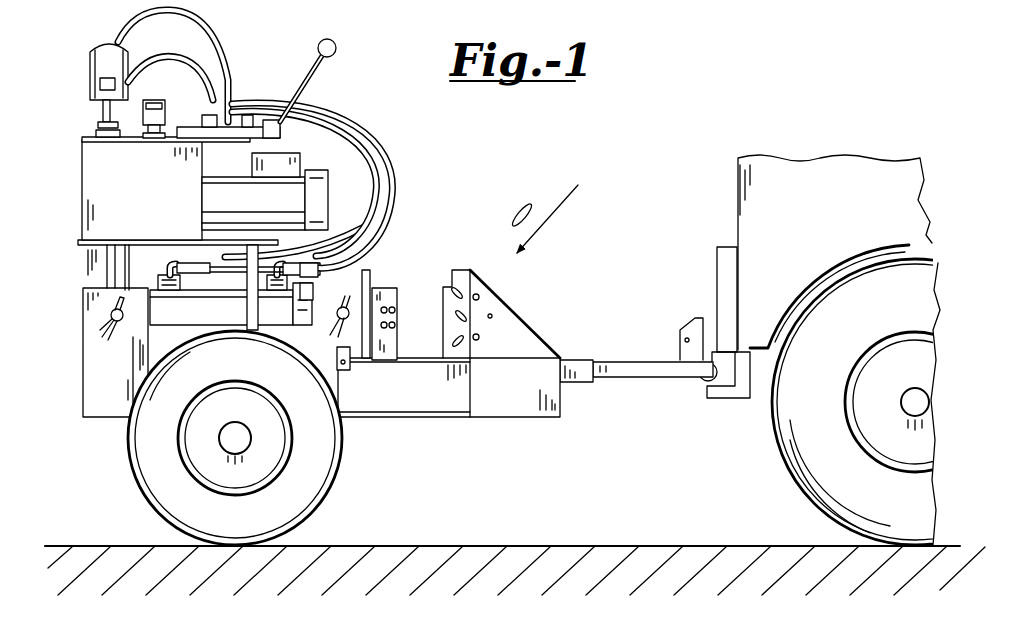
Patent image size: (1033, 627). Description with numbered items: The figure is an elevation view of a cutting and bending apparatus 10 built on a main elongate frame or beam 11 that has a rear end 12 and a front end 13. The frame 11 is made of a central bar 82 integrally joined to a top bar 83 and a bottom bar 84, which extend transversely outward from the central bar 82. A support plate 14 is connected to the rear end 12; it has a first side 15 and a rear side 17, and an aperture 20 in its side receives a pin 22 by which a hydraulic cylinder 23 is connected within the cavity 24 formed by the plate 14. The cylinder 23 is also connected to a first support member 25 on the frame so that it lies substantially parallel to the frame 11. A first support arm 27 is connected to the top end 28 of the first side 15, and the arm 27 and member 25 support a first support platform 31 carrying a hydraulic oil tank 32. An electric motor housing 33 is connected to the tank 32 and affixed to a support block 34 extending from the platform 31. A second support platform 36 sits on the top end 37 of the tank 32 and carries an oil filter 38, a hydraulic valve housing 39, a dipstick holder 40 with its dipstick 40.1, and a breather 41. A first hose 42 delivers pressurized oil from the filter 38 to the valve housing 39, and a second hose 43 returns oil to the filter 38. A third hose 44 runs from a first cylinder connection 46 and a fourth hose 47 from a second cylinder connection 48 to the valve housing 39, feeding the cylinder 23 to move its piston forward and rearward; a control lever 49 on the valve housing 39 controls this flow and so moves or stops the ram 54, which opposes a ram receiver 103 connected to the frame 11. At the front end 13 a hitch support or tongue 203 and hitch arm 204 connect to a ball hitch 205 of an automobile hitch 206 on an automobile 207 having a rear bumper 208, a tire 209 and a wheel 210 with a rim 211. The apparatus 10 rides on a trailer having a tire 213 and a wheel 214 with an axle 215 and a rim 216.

The cutting and bending apparatus 10 is at (545, 207).
The main elongate frame or beam 11 is at (443, 420).
The rear end 12 is at (78, 420).
The front end 13 is at (522, 420).
The support plate 14 is at (83, 380).
The first side 15 is at (100, 402).
The rear side 17 is at (83, 357).
The aperture 20 is at (112, 318).
The pin 22 is at (112, 309).
The hydraulic cylinder 23 is at (170, 330).
The cavity 24 is at (108, 285).
The first support member 25 is at (250, 325).
The first support arm 27 is at (128, 245).
The top end 28 is at (160, 279).
The first support platform 31 is at (140, 240).
The hydraulic oil tank 32 is at (107, 222).
The electric motor housing 33 is at (246, 183).
The support block 34 is at (228, 227).
The second support platform 36 is at (88, 138).
The top end 37 is at (123, 142).
The oil filter 38 is at (97, 57).
The hydraulic valve housing 39 is at (197, 127).
The dipstick holder 40 is at (113, 80).
The dipstick 40.1 is at (113, 78).
The breather 41 is at (137, 110).
The first hose 42 is at (138, 77).
The second hose 43 is at (125, 22).
The third hose 44 is at (357, 153).
The first cylinder connection 46 is at (178, 267).
The fourth hose 47 is at (390, 175).
The second cylinder connection 48 is at (256, 272).
The control lever 49 is at (297, 90).
The ram 54 is at (366, 270).
The central bar 82 is at (385, 395).
The top bar 83 is at (433, 360).
The bottom bar 84 is at (417, 417).
The ram receiver 103 is at (510, 292).
The hitch support or tongue 203 is at (585, 370).
The hitch arm 204 is at (642, 380).
The ball hitch 205 is at (700, 380).
The automobile hitch 206 is at (708, 400).
The automobile 207 is at (800, 180).
The rear bumper 208 is at (725, 243).
The tire 209 is at (822, 473).
The wheel 210 is at (900, 357).
The rim 211 is at (848, 413).
The tire 213 is at (157, 505).
The wheel 214 is at (195, 435).
The axle 215 is at (220, 432).
The rim 216 is at (178, 453).